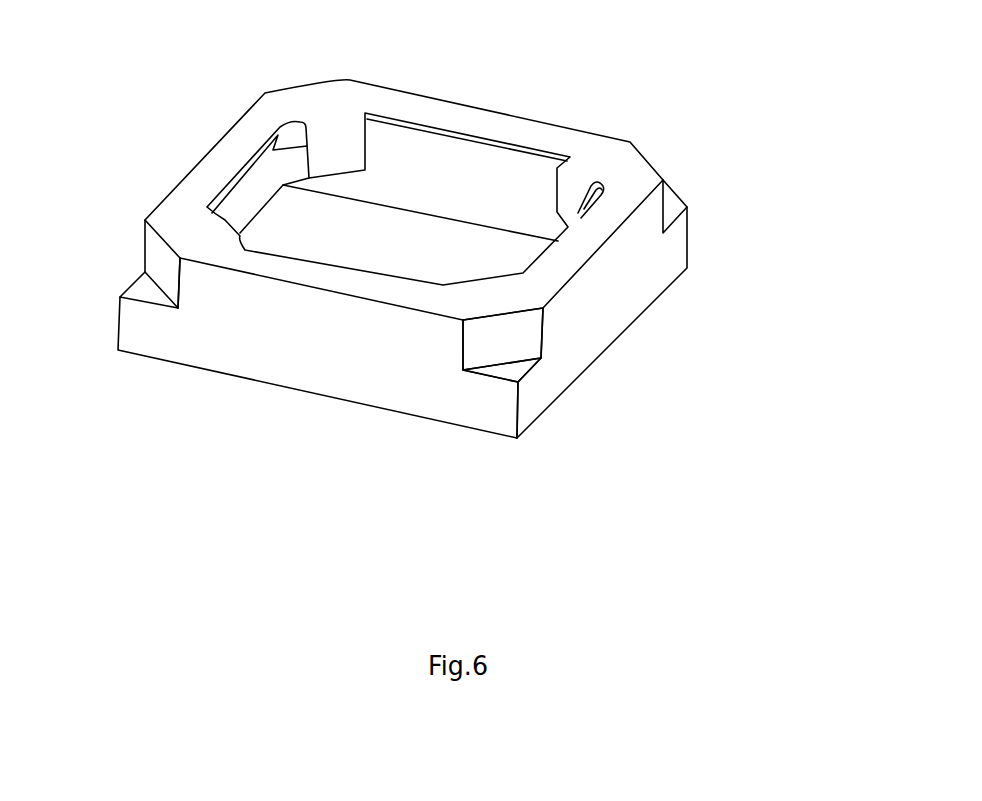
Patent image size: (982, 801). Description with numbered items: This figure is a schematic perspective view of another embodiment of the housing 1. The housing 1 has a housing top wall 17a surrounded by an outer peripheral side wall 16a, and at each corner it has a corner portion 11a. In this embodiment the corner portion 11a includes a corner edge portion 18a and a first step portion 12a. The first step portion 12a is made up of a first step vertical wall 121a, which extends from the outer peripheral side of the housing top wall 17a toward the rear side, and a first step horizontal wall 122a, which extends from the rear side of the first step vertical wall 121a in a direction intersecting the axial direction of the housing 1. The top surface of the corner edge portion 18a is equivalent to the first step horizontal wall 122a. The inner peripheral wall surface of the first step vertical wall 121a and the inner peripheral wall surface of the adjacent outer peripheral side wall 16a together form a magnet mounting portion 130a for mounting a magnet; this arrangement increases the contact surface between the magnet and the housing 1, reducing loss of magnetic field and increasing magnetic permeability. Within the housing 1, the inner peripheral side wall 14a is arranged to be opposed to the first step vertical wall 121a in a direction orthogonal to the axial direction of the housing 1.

The housing 1 is at (93, 24).
The corner portion 11a is at (464, 282).
The first step portion 12a is at (423, 351).
The first step vertical wall 121a is at (507, 340).
The first step horizontal wall 122a is at (510, 373).
The magnet mounting portion 130a is at (180, 445).
The inner peripheral side wall 14a is at (345, 153).
The outer peripheral side wall 16a is at (585, 325).
The housing top wall 17a is at (436, 175).
The corner edge portion 18a is at (513, 422).